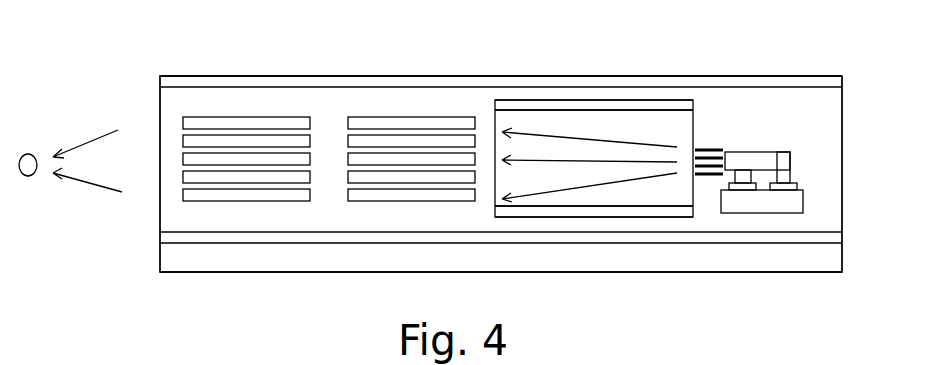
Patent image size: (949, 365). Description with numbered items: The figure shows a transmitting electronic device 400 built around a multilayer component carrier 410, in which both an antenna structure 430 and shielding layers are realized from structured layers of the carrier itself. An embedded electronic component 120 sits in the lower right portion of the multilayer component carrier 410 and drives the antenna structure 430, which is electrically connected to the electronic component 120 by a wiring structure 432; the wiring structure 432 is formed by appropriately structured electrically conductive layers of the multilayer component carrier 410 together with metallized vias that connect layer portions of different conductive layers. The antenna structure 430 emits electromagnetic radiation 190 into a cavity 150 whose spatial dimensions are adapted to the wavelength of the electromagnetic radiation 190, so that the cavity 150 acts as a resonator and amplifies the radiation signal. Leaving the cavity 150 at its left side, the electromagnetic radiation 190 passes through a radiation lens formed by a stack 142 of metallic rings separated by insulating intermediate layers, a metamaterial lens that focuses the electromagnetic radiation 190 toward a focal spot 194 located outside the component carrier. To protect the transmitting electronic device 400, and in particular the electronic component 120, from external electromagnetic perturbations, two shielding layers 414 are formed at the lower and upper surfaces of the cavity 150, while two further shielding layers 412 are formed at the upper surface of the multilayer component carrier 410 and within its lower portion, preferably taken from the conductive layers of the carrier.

The transmitting electronic device 400 is at (820, 60).
The multilayer component carrier 410 is at (830, 116).
The shielding layers 412 is at (568, 78).
The shielding layers 414 is at (626, 103).
The stack of metallic rings 142 is at (248, 114).
The cavity 150 is at (535, 131).
The electromagnetic radiation 190 is at (92, 140).
The focal spot 194 is at (27, 153).
The antenna structure 430 is at (707, 150).
The wiring structure 432 is at (752, 153).
The electronic component 120 is at (795, 200).